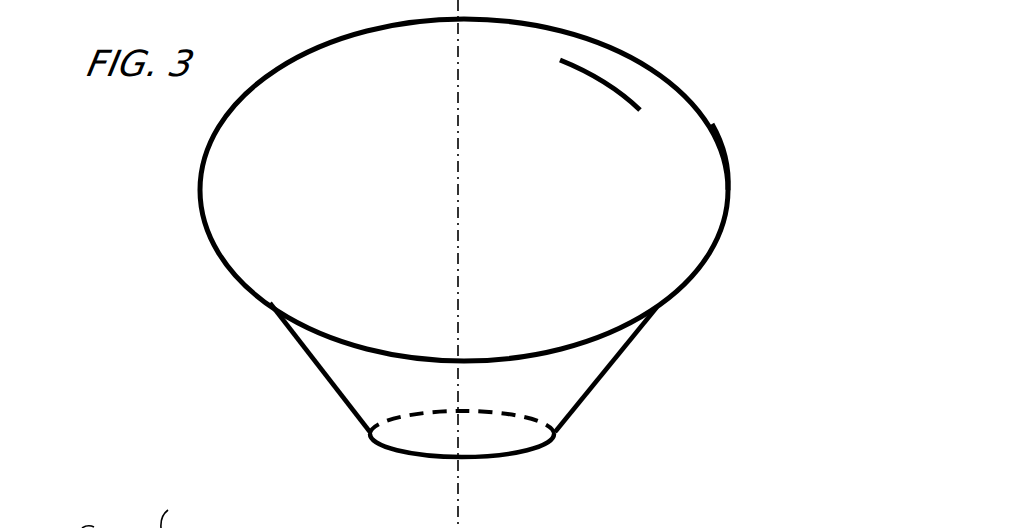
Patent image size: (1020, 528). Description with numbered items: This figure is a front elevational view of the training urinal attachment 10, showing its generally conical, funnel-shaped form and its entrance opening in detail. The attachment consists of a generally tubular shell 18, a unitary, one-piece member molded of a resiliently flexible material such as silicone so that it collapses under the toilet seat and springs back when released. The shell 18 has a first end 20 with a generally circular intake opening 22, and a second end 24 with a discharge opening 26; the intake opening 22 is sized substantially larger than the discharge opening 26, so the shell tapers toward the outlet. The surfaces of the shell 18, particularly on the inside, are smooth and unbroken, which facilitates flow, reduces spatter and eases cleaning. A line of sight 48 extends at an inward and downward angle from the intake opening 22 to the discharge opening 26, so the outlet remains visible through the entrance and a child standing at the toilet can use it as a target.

The urinal attachment 10 is at (126, 272).
The shell 18 is at (598, 378).
The first end 20 is at (712, 125).
The intake opening 22 is at (600, 90).
The second end 24 is at (416, 456).
The discharge opening 26 is at (509, 472).
The line of sight 48 is at (456, 185).